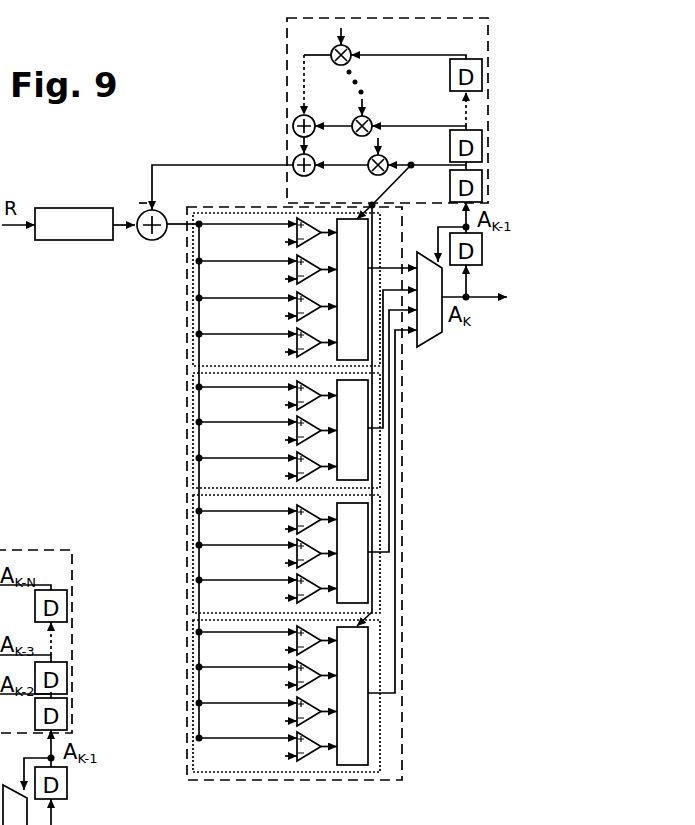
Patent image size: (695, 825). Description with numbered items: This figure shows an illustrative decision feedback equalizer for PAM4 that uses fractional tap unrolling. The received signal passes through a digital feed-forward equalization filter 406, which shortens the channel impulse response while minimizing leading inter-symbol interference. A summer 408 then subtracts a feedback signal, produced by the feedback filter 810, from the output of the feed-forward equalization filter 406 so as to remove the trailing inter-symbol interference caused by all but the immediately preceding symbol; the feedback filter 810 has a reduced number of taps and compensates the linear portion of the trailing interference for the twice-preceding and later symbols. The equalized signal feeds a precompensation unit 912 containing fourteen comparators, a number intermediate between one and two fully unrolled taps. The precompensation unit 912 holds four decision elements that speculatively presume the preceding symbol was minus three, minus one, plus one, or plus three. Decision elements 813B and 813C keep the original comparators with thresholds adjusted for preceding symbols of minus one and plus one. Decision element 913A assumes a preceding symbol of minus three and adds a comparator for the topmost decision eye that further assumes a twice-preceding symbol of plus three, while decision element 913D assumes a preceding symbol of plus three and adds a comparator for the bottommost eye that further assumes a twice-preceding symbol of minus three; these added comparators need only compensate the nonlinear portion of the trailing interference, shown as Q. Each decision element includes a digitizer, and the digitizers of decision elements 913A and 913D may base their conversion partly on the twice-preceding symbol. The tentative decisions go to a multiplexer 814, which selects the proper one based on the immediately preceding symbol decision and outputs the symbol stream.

The feed-forward equalization filter 406 is at (83, 242).
The summer 408 is at (148, 241).
The feedback filter 810 is at (287, 111).
The precompensation unit 912 is at (402, 508).
The decision element 913D is at (193, 296).
The decision element 813C is at (193, 433).
The decision element 813B is at (193, 539).
The decision element 913A is at (193, 656).
The multiplexer 814 is at (436, 341).